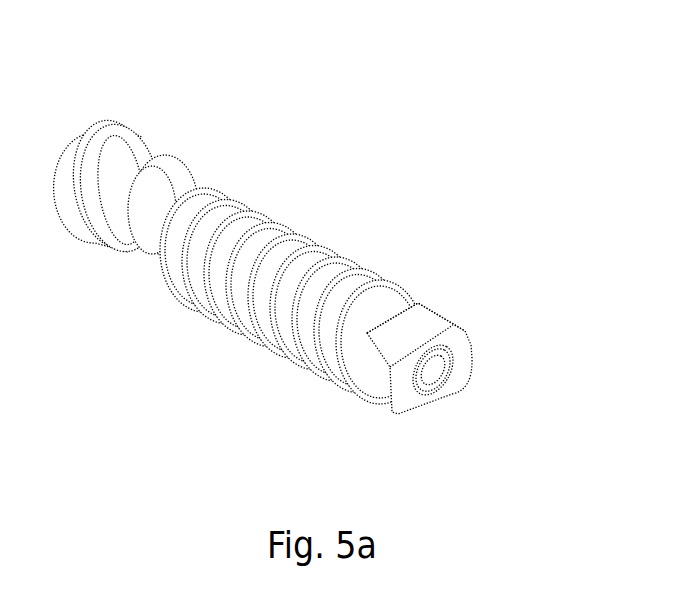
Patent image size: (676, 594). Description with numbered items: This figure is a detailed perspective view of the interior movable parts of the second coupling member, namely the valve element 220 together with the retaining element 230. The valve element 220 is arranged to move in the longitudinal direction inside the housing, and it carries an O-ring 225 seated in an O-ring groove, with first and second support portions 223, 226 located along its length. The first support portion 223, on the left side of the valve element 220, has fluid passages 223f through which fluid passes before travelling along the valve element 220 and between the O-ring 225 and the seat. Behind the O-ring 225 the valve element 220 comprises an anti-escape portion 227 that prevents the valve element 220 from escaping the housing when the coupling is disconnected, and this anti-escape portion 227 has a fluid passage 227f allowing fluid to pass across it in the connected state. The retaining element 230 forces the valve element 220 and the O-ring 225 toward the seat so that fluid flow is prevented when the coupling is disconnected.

The valve element 220 is at (300, 218).
The first support portion 223 is at (457, 311).
The fluid passages 223f is at (427, 328).
The O-ring 225 is at (148, 160).
The second support portion 226 is at (167, 172).
The anti-escape portion 227 is at (148, 137).
The fluid passage 227f is at (103, 137).
The retaining element 230 is at (363, 278).